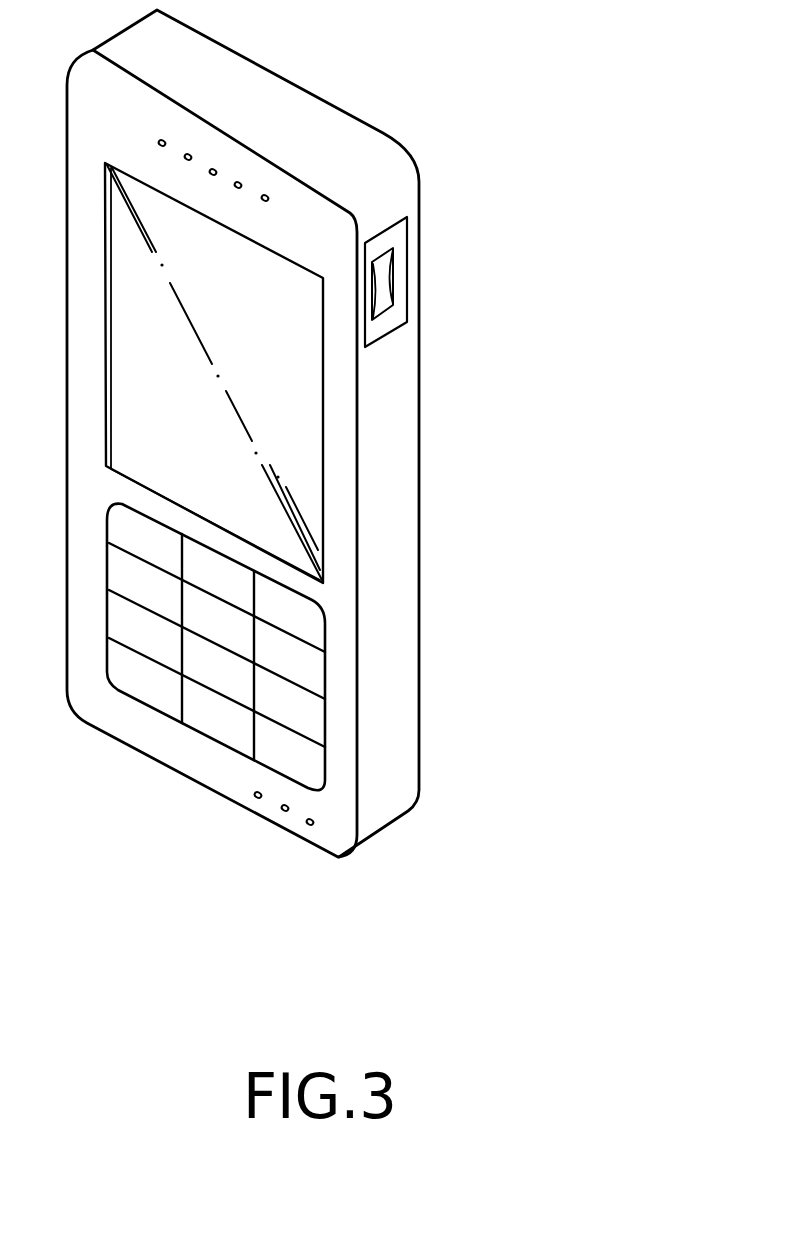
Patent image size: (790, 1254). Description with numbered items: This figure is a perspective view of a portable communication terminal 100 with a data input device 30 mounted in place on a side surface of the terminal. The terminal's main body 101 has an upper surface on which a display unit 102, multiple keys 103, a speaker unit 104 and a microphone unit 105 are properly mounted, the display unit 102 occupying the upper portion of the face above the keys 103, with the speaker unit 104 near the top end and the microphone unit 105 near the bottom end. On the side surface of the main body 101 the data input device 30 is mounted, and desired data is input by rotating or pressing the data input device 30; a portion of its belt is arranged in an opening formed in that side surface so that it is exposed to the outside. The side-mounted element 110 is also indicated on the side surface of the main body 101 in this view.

The portable communication terminal 100 is at (562, 122).
The main body 101 is at (400, 625).
The display unit 102 is at (300, 457).
The keys 103 is at (310, 673).
The speaker unit 104 is at (243, 183).
The microphone unit 105 is at (312, 826).
The camera 110 is at (390, 277).
The data input device 30 is at (432, 303).